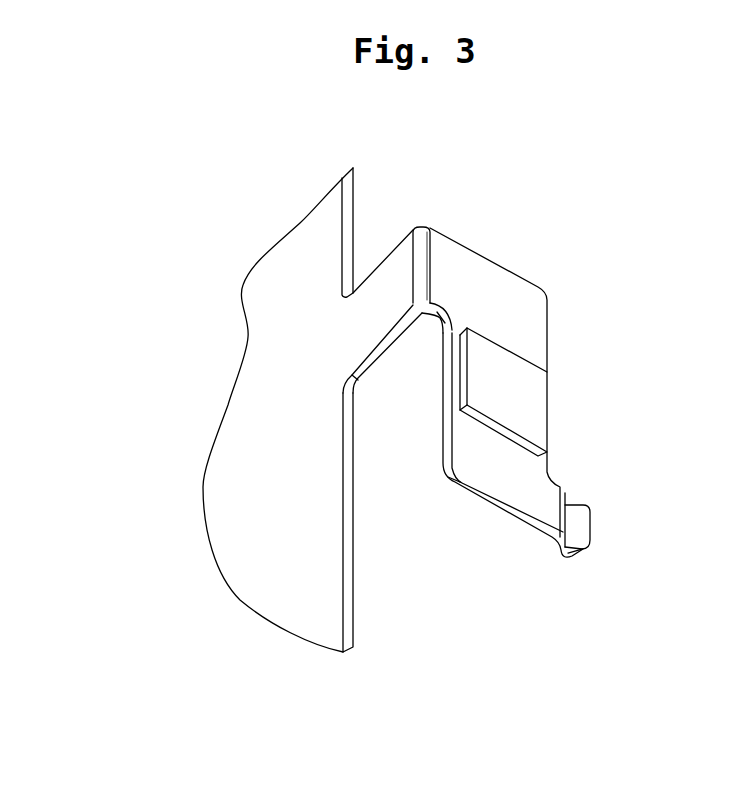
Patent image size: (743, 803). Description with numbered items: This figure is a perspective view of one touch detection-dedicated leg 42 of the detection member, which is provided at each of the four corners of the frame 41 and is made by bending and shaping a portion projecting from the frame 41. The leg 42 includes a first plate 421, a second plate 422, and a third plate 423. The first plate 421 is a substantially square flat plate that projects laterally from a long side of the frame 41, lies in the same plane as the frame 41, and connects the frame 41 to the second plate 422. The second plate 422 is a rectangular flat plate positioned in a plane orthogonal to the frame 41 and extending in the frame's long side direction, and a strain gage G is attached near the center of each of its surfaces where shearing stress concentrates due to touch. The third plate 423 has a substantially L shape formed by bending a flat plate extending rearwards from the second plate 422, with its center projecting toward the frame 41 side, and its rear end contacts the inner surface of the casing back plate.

The frame 41 is at (262, 449).
The touch detection-dedicated leg 42 is at (518, 346).
The first plate 421 is at (393, 293).
The second plate 422 is at (525, 318).
The third plate 423 is at (578, 533).
The strain gage G is at (517, 393).